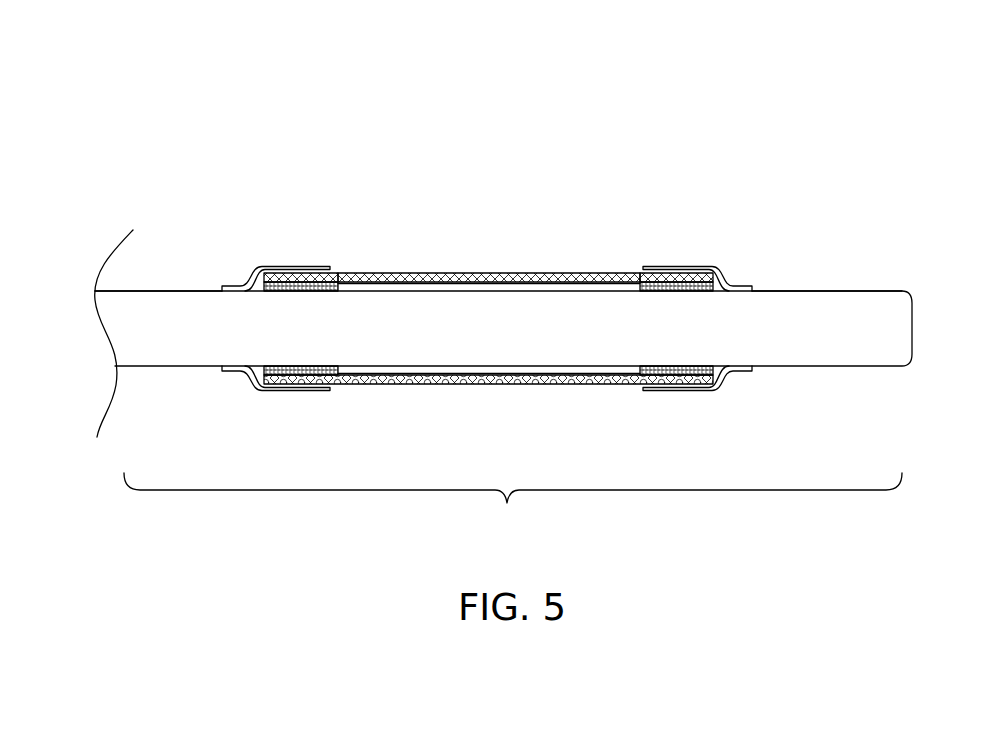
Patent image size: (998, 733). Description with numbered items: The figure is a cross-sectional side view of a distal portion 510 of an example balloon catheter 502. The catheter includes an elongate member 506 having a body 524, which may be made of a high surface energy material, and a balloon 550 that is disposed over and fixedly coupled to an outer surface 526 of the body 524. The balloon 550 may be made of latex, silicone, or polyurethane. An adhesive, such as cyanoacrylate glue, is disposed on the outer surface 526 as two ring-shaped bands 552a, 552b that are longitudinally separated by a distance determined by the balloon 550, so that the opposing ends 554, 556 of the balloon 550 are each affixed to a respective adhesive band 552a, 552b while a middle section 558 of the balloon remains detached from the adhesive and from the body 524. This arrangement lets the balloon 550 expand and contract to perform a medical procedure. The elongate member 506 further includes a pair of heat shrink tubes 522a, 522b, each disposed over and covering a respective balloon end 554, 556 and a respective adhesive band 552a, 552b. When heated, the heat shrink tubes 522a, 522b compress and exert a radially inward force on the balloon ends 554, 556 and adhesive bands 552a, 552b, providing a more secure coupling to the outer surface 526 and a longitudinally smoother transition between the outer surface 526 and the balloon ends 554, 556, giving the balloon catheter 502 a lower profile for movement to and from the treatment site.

The balloon catheter 502 is at (902, 103).
The elongate member 506 is at (178, 300).
The distal portion 510 is at (513, 507).
The heat shrink tube 522a is at (250, 379).
The heat shrink tube 522b is at (729, 380).
The body 524 is at (830, 361).
The outer surface 526 is at (813, 290).
The balloon 550 is at (487, 382).
The adhesive band 552a is at (337, 282).
The adhesive band 552b is at (645, 288).
The end of the balloon 554 is at (282, 278).
The end of the balloon 556 is at (700, 278).
The middle section 558 is at (483, 280).